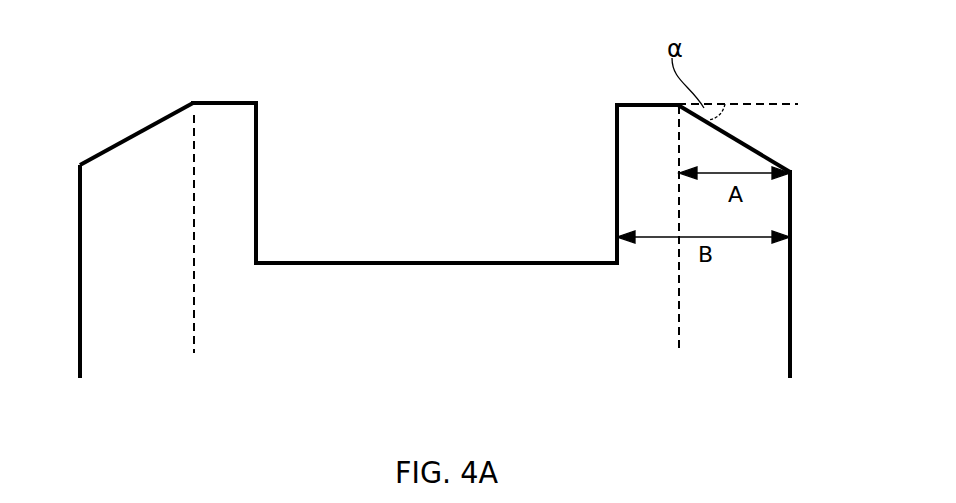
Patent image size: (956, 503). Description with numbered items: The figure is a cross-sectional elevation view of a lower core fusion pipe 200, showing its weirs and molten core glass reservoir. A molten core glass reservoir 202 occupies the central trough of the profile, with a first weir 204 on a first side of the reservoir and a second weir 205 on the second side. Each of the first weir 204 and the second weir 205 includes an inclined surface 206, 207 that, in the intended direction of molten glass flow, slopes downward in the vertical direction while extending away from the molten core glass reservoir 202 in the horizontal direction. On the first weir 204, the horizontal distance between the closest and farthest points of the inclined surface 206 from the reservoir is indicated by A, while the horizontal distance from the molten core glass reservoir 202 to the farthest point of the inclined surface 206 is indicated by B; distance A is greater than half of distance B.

The lower core fusion pipe 200 is at (436, 202).
The molten core glass reservoir 202 is at (436, 265).
The first weir 204 is at (783, 276).
The second weir 205 is at (87, 263).
The inclined surface 206 is at (735, 137).
The inclined surface 207 is at (137, 128).